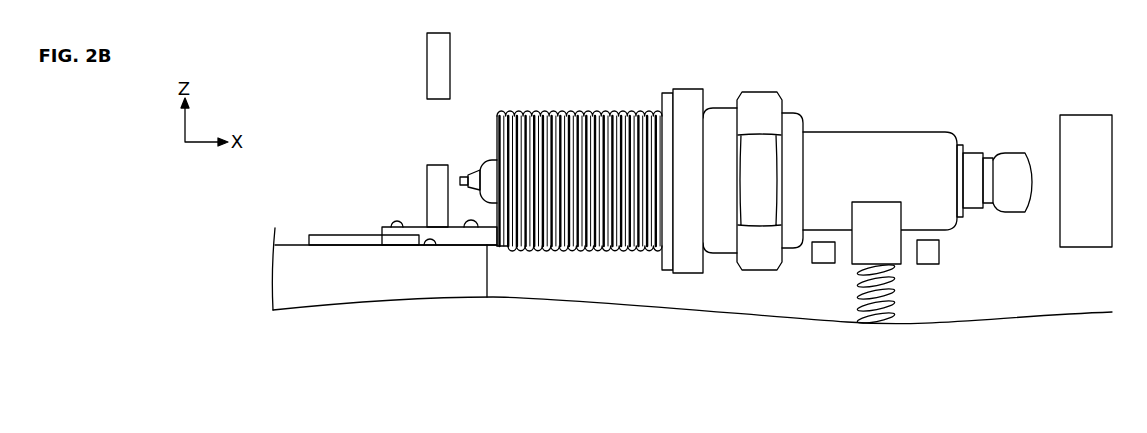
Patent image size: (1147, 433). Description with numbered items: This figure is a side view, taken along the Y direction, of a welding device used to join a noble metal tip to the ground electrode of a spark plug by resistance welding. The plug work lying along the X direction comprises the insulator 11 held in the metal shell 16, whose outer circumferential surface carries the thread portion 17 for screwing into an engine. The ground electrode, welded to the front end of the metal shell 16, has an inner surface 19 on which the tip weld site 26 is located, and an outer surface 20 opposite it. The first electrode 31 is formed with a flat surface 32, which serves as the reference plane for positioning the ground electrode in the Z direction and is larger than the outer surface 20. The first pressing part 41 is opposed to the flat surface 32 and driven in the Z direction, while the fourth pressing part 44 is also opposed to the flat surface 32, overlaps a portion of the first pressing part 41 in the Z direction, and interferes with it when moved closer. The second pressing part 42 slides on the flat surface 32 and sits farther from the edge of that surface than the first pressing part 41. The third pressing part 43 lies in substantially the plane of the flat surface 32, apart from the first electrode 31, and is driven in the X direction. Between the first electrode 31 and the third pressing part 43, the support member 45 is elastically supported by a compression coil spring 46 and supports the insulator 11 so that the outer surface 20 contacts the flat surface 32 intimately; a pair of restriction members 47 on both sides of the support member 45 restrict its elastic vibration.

The insulator 11 is at (846, 143).
The metal shell 16 is at (686, 98).
The thread portion 17 is at (585, 110).
The inner surface 19 is at (469, 229).
The outer surface 20 is at (452, 247).
The tip weld site 26 is at (391, 228).
The first electrode 31 is at (373, 295).
The flat surface 32 is at (426, 246).
The first pressing part 41 is at (438, 172).
The second pressing part 42 is at (351, 240).
The third pressing part 43 is at (1088, 128).
The fourth pressing part 44 is at (441, 56).
The support member 45 is at (880, 213).
The spring 46 is at (892, 295).
The restriction members 47 is at (823, 260).